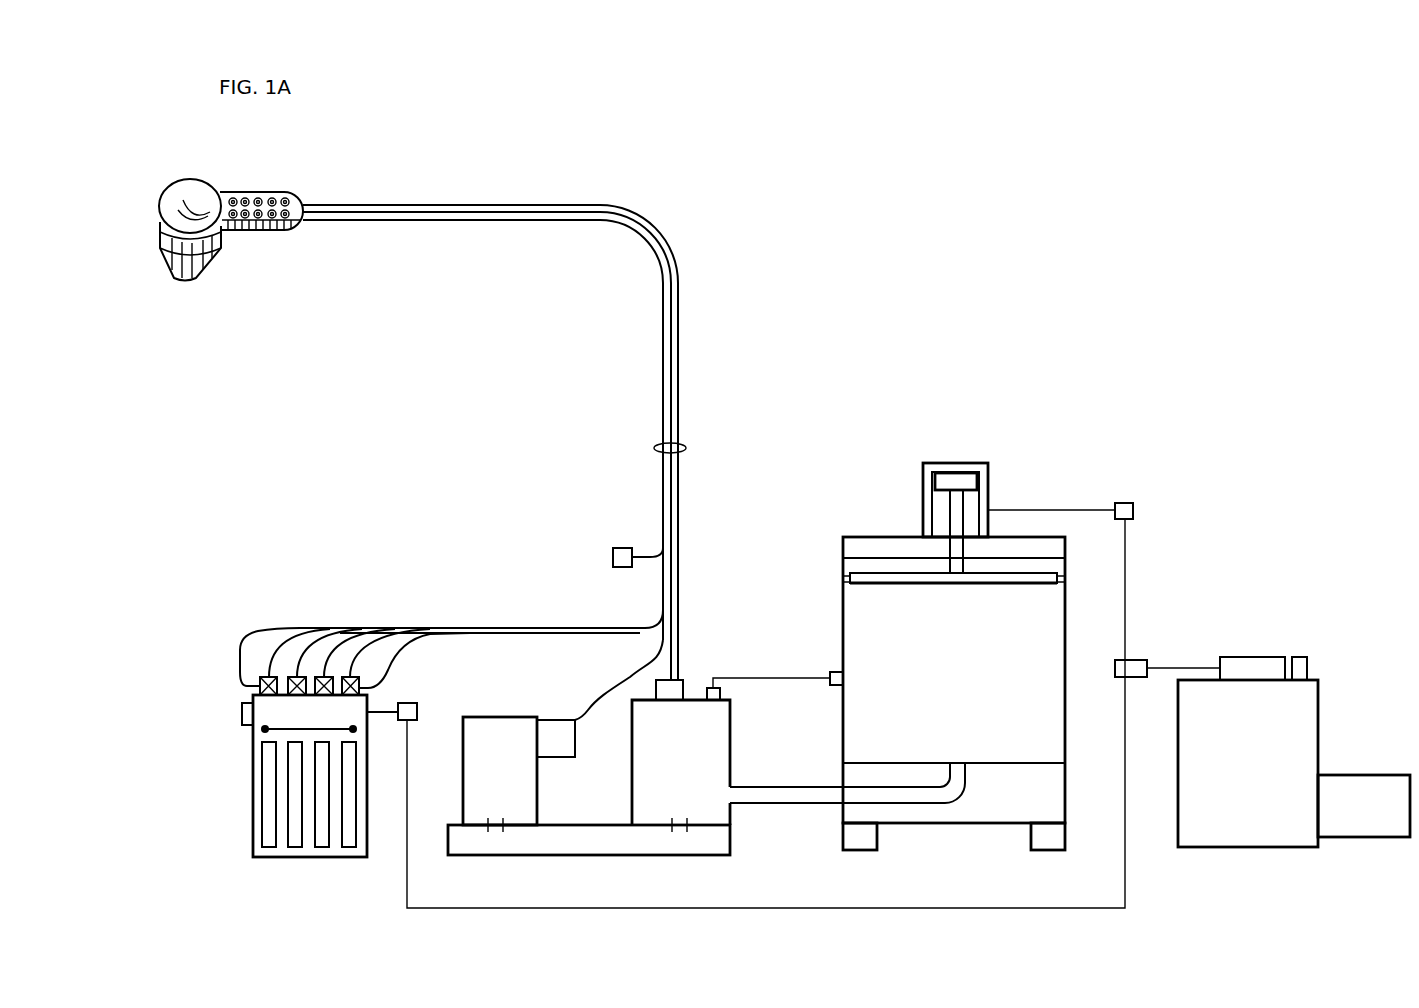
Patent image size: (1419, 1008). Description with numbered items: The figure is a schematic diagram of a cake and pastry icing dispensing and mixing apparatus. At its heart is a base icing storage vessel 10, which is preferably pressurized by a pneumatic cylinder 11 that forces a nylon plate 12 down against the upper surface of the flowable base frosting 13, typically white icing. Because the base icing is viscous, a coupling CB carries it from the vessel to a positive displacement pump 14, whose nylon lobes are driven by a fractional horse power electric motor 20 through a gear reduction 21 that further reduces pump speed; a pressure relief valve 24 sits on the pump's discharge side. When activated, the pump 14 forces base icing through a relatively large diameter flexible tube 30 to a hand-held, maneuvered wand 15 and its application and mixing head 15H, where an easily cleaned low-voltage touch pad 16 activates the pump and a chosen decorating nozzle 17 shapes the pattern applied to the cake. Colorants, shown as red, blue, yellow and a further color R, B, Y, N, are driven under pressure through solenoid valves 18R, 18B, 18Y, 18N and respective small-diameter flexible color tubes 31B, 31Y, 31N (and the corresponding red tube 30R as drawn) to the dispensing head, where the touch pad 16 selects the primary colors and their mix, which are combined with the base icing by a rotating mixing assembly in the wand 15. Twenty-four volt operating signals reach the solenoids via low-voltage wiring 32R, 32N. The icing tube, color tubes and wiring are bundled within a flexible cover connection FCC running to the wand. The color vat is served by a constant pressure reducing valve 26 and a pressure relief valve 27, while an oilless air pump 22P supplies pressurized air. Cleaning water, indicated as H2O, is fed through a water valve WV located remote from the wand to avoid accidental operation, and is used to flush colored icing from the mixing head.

The base icing storage vessel 10 is at (956, 625).
The pneumatic cylinder 11 is at (1006, 474).
The nylon plate 12 is at (1012, 573).
The flowable base frosting 13 is at (947, 690).
The positive displacement pump 14 is at (632, 788).
The hand-held wand 15 is at (225, 212).
The application and mixing head 15H is at (163, 216).
The touch pad 16 is at (283, 194).
The decorating nozzle 17 is at (205, 270).
The solenoid valve (red) 18R is at (258, 686).
The solenoid valve (blue) 18B is at (299, 695).
The solenoid valve (yellow) 18Y is at (323, 695).
The solenoid valve (Nth color) 18N is at (359, 690).
The electric motor 20 is at (503, 717).
The gear reduction 21 is at (590, 856).
The oilless air pump 22P is at (1310, 740).
The pressure relief valve 24 is at (722, 690).
The constant pressure reducing valve 26 is at (415, 704).
The pressure relief valve (color vat) 27 is at (242, 714).
The flexible tube 30 is at (681, 650).
The red ink tube 30R is at (283, 655).
The color tube (blue) 31B is at (312, 648).
The color tube (yellow) 31Y is at (340, 650).
The color tube (Nth color) 31N is at (366, 652).
The solenoid wiring (red) 32R is at (246, 656).
The solenoid wiring (Nth color) 32N is at (445, 633).
The red ink cartridge R is at (266, 779).
The blue ink cartridge B is at (297, 808).
The yellow ink cartridge Y is at (320, 832).
The black ink cartridge N is at (350, 808).
The flexible cover connection FCC is at (684, 450).
The water valve WV is at (624, 548).
The water supply H2O is at (613, 558).
The coupling CB is at (788, 787).